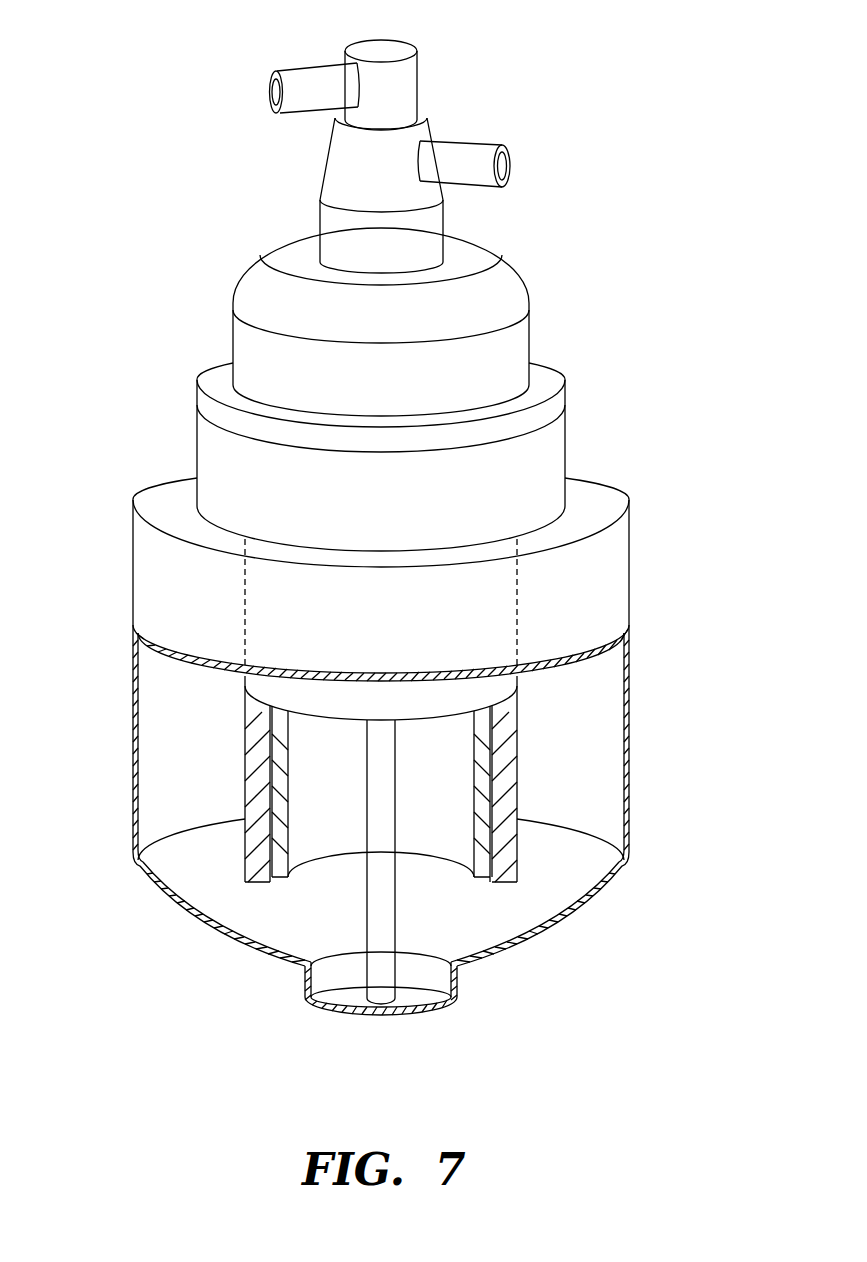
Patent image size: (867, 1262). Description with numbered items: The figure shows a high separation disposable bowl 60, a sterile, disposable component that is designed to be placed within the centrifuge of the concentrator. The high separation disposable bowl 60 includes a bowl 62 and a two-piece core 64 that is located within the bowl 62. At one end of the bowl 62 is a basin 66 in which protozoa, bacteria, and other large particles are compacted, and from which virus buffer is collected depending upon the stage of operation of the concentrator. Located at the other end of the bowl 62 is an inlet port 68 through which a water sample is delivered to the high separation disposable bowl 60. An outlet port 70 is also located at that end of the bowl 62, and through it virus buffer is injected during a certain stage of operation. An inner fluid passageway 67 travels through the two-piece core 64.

The high separation disposable bowl 60 is at (142, 202).
The bowl 62 is at (142, 567).
The two-piece core 64 is at (250, 750).
The basin 66 is at (417, 1002).
The inner fluid passageway 67 is at (372, 918).
The inlet port 68 is at (313, 80).
The outlet port 70 is at (468, 150).